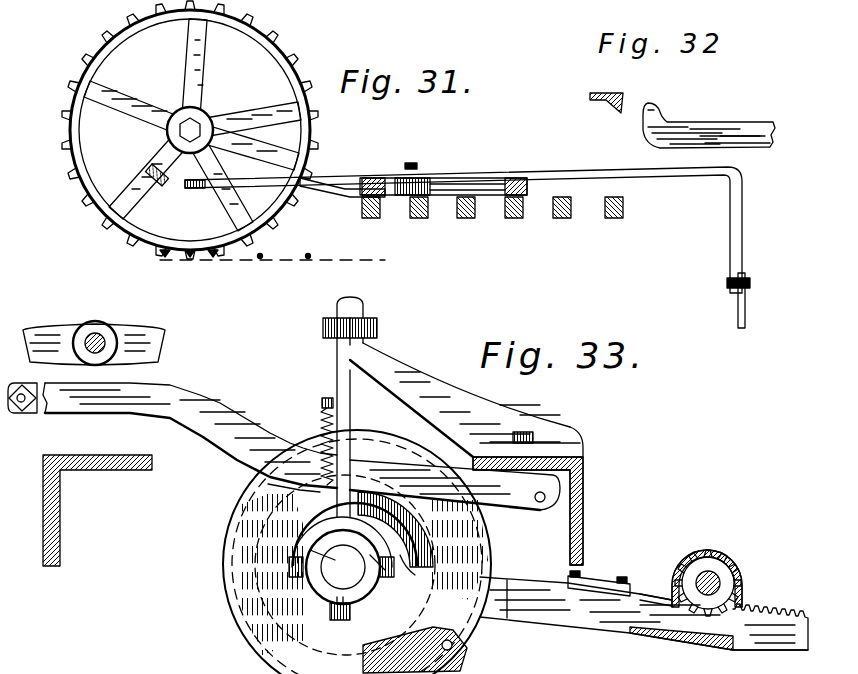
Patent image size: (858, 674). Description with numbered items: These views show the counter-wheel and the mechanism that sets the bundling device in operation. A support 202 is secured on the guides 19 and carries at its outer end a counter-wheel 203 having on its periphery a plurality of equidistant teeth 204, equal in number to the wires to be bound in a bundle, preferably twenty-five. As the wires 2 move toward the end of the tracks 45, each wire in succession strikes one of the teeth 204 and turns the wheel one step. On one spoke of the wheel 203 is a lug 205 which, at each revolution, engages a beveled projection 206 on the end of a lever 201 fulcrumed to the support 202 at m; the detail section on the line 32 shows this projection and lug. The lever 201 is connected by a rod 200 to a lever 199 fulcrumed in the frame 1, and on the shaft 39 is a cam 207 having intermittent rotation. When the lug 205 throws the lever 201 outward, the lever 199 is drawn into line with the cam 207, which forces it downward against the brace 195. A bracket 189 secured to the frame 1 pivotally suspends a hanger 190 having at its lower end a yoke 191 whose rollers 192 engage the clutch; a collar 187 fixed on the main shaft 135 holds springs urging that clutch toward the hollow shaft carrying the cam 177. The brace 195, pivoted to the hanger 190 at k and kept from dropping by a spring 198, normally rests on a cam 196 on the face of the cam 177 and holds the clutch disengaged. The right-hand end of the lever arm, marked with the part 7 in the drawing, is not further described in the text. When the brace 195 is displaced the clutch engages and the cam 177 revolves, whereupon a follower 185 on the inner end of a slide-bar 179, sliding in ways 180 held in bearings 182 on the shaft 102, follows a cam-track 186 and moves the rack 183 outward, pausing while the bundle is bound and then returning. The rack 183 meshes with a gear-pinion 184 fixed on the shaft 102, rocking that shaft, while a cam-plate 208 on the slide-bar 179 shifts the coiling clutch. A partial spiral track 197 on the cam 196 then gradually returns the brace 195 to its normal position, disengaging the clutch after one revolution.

In FIG. 31, the counter-wheel 203 is at (283, 66).
In FIG. 31, the teeth 204 is at (262, 24).
In FIG. 31, the lug 205 is at (155, 187).
In FIG. 32, the lug 205 is at (623, 98).
In FIG. 31, the section line 32 is at (160, 172).
In FIG. 31, the trip-lever 201 is at (575, 172).
In FIG. 32, the trip-lever 201 is at (737, 130).
In FIG. 31, the rod 200 is at (738, 310).
In FIG. 33, the rod 200 is at (32, 413).
In FIG. 31, the fulcrum m is at (413, 163).
In FIG. 31, the guides 19 is at (378, 218).
In FIG. 31, the support 202 is at (340, 193).
In FIG. 31, the tracks 45 is at (385, 260).
In FIG. 31, the wires 2 is at (165, 258).
In FIG. 32, the projection 206 is at (652, 108).
In FIG. 33, the cam 207 is at (125, 333).
In FIG. 33, the shaft 39 is at (88, 333).
In FIG. 33, the lever 199 is at (225, 400).
In FIG. 33, the arm end 7 is at (545, 510).
In FIG. 33, the cam 196 is at (270, 472).
In FIG. 33, the frame 1 is at (60, 520).
In FIG. 33, the bracket 189 is at (445, 393).
In FIG. 33, the hanger 190 is at (340, 378).
In FIG. 33, the pivot k is at (333, 316).
In FIG. 33, the spring 198 is at (320, 418).
In FIG. 33, the cam 177 is at (250, 646).
In FIG. 33, the track 197 is at (415, 540).
In FIG. 33, the brace 195 is at (292, 522).
In FIG. 33, the main shaft 135 is at (343, 567).
In FIG. 33, the yoke 191 is at (415, 575).
In FIG. 33, the rollers 192 is at (300, 555).
In FIG. 33, the collar 187 is at (352, 622).
In FIG. 33, the cam-track 186 is at (455, 660).
In FIG. 33, the follower 185 is at (498, 556).
In FIG. 33, the ways 180 is at (585, 630).
In FIG. 33, the cam-plate 208 is at (600, 580).
In FIG. 33, the slide-bar 179 is at (660, 600).
In FIG. 33, the gear-pinion 184 is at (700, 552).
In FIG. 33, the bearings 182 is at (738, 565).
In FIG. 33, the shaft 102 is at (722, 583).
In FIG. 33, the rack 183 is at (770, 612).